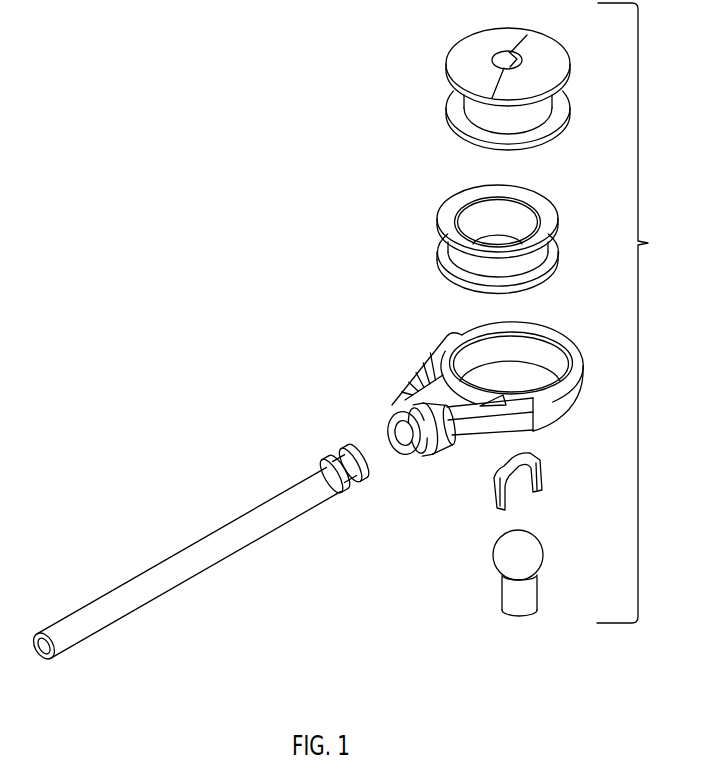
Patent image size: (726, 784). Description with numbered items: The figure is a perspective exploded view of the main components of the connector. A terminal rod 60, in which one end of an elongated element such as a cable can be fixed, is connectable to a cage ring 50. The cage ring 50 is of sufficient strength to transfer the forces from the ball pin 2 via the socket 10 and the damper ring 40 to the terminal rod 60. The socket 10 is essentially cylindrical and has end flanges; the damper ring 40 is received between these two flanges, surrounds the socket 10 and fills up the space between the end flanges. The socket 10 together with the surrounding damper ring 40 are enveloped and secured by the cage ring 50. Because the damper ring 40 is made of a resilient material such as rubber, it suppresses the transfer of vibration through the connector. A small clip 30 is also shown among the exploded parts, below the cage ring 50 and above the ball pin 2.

The socket 10 is at (563, 53).
The damper ring 40 is at (550, 202).
The cage ring 50 is at (552, 332).
The clip 30 is at (542, 472).
The ball pin 2 is at (542, 547).
The terminal rod 60 is at (262, 536).